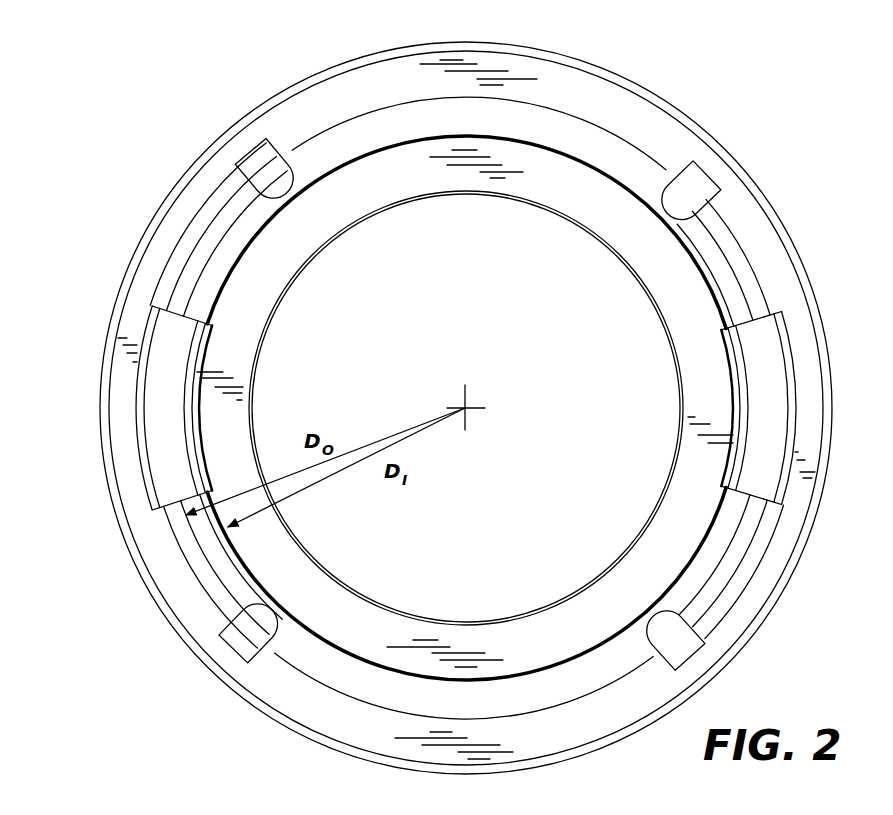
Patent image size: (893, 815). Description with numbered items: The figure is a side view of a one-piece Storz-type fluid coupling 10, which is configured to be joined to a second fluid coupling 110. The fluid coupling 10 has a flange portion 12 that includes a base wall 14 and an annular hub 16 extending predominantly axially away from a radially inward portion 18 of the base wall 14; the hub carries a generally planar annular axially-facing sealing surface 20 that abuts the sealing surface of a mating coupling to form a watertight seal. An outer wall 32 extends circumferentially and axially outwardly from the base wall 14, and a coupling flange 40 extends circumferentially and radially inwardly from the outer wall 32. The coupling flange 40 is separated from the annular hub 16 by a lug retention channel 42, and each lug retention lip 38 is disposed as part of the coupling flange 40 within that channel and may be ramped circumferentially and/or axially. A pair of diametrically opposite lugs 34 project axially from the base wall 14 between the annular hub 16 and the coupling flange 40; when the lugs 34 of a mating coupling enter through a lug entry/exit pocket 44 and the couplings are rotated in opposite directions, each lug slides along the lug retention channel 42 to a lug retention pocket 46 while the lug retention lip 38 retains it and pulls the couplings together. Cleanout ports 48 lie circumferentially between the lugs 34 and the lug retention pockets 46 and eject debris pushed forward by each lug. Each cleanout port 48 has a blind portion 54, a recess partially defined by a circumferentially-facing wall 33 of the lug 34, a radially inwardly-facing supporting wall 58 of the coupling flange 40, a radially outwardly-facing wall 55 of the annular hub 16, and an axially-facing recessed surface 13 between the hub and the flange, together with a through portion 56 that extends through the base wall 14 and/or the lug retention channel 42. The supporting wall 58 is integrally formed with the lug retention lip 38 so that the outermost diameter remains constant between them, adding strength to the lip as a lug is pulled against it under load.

The fluid coupling 10 is at (126, 85).
The flange portion 12 is at (632, 104).
The axially-facing recessed surface 13 is at (733, 296).
The base wall 14 is at (446, 196).
The annular hub 16 is at (678, 272).
The radially inward portion 18 is at (516, 194).
The annular axially-facing sealing surface 20 is at (382, 182).
The outer wall 32 is at (648, 735).
The circumferentially-facing wall 33 is at (752, 318).
The lug 34 is at (764, 358).
The lug retention lip 38 is at (298, 140).
The coupling flange 40 is at (200, 623).
The lug retention channel 42 is at (466, 116).
The lug entry/exit pocket 44 is at (210, 232).
The lug retention pocket 46 is at (658, 176).
The cleanout port 48 is at (722, 258).
The blind portion 54 is at (740, 278).
The radially outwardly-facing wall 55 is at (694, 228).
The through portion 56 is at (640, 148).
The supporting wall 58 is at (720, 242).
The fluid coupling 110 is at (24, 811).